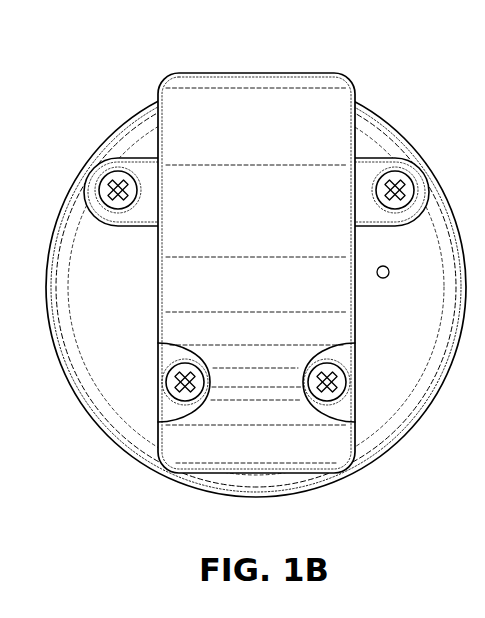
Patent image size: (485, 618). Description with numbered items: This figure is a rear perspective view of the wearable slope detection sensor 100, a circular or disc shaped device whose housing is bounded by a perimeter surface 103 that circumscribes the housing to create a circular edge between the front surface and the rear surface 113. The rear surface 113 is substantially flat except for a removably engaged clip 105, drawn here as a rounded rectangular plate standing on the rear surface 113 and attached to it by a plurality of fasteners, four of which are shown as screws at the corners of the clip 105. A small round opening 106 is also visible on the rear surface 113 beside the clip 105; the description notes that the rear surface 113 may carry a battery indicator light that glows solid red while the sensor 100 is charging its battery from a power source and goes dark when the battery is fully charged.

The sensor 100 is at (78, 80).
The perimeter surface 103 is at (388, 121).
The clip 105 is at (250, 108).
The opening 106 is at (384, 279).
The rear surface 113 is at (97, 364).